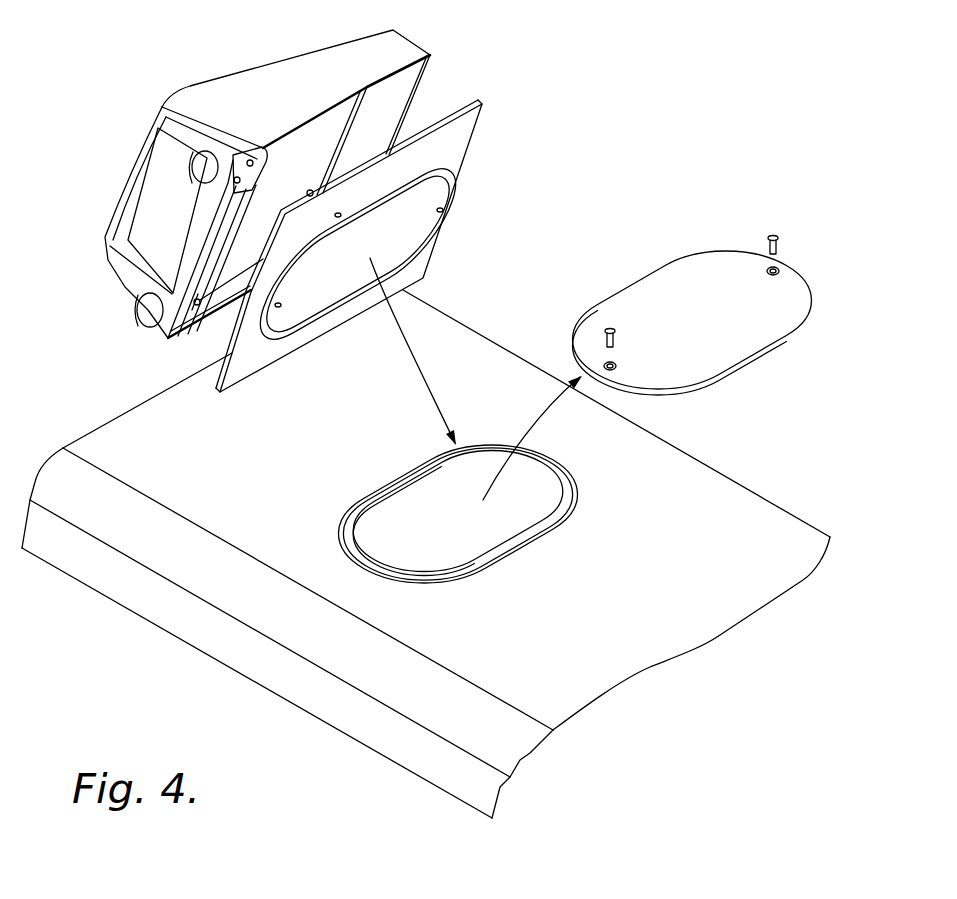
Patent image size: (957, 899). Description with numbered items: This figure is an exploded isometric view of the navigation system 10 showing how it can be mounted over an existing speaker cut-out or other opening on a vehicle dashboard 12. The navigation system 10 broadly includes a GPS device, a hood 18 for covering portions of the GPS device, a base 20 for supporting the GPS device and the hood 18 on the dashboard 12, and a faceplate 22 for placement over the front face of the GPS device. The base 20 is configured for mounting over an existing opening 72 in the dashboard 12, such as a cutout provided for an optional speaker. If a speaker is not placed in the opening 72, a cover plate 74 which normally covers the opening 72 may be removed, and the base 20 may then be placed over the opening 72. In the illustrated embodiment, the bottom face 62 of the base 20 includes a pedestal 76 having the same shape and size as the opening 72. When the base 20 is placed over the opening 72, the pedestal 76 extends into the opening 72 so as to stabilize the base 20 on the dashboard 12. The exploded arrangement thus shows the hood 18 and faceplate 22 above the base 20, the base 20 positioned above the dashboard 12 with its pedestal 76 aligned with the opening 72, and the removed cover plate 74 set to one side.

The navigation system 10 is at (162, 53).
The dashboard 12 is at (631, 634).
The hood 18 is at (317, 70).
The base 20 is at (503, 98).
The faceplate 22 is at (175, 105).
The bottom face 62 is at (463, 140).
The opening 72 is at (527, 508).
The cover plate 74 is at (742, 340).
The pedestal 76 is at (423, 223).